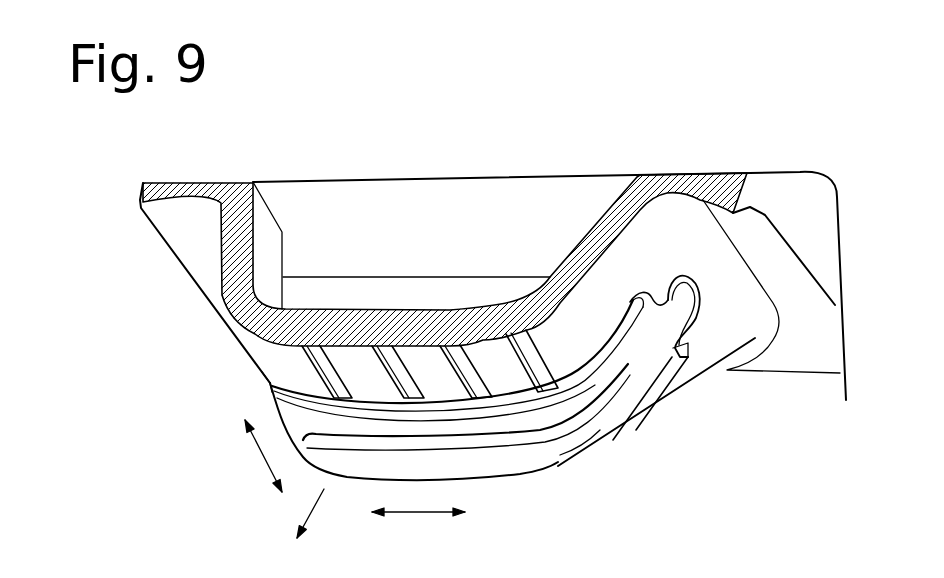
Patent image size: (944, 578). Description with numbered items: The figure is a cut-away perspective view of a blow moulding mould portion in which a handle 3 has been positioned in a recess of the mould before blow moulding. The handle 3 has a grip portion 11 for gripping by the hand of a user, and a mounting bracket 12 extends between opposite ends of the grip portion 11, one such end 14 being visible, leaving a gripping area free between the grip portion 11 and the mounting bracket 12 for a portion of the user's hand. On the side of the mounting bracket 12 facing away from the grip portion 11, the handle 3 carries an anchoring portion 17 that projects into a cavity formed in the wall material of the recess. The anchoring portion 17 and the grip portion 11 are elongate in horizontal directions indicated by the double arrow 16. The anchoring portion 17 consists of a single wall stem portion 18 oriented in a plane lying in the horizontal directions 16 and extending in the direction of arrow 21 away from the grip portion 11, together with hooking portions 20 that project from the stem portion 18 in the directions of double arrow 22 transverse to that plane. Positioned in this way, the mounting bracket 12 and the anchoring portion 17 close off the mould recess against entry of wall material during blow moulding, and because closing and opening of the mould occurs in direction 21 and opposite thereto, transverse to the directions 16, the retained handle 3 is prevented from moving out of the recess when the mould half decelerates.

The handle 3 is at (690, 383).
The grip portion 11 is at (401, 293).
The mounting bracket 12 is at (632, 403).
The end of the grip portion 14 is at (679, 276).
The horizontal directions 16 is at (400, 515).
The anchoring portion 17 is at (268, 398).
The stem portion 18 is at (578, 440).
The hooking portions 20 is at (513, 440).
The direction away from the grip portion 21 is at (308, 512).
The directions transverse to the plane 22 is at (264, 459).